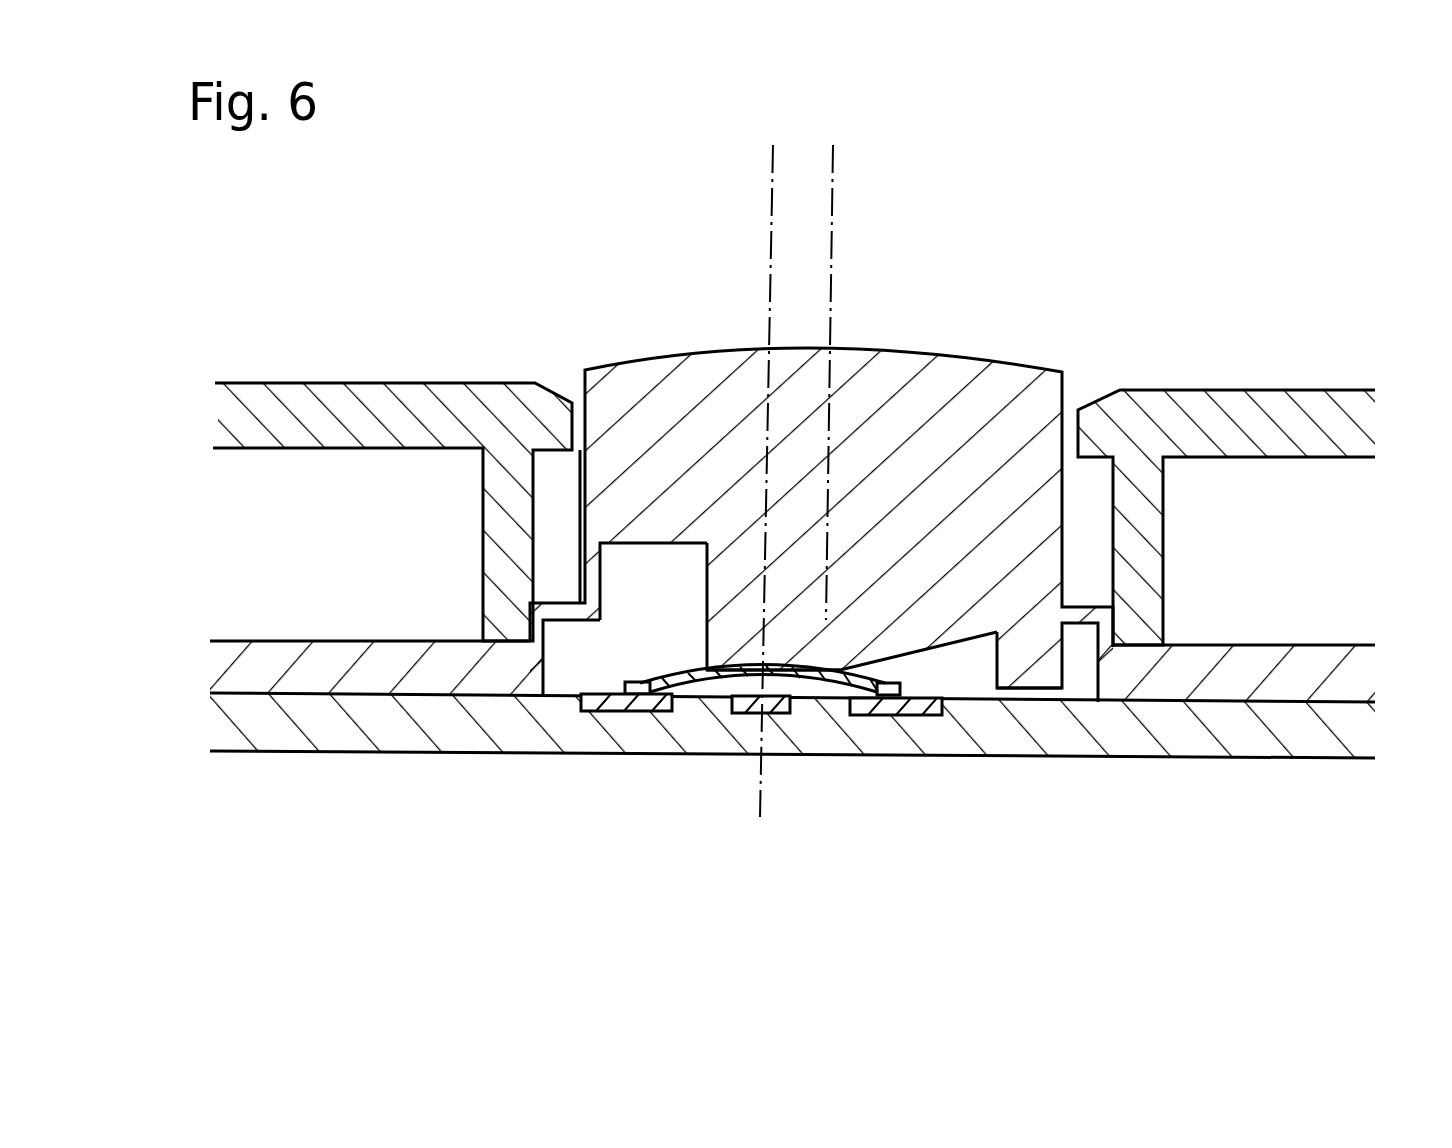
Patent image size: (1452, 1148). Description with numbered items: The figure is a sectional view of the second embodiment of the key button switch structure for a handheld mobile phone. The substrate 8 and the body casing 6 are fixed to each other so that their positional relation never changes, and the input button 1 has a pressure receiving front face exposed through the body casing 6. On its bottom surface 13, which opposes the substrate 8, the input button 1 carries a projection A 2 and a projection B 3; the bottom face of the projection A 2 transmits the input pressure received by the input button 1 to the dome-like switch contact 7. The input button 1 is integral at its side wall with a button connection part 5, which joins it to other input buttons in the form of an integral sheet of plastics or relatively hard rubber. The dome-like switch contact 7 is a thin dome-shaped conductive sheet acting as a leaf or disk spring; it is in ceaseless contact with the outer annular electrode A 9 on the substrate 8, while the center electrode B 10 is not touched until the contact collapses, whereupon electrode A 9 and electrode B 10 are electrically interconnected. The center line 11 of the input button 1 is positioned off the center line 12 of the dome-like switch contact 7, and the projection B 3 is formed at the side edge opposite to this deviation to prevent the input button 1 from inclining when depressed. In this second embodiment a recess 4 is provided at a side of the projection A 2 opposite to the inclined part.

The input button 1 is at (852, 446).
The projection A 2 is at (660, 446).
The projection B 3 is at (1138, 725).
The recess 4 is at (528, 476).
The button connection part 5 is at (813, 593).
The body casing 6 is at (1187, 388).
The dome-like switch contact 7 is at (542, 577).
The substrate 8 is at (789, 793).
The electrode A 9 is at (755, 800).
The electrode B 10 is at (751, 824).
The center line of the input button 11 is at (1050, 382).
The center line of the dome-like switch contact 12 is at (610, 467).
The bottom surface 13 is at (954, 452).